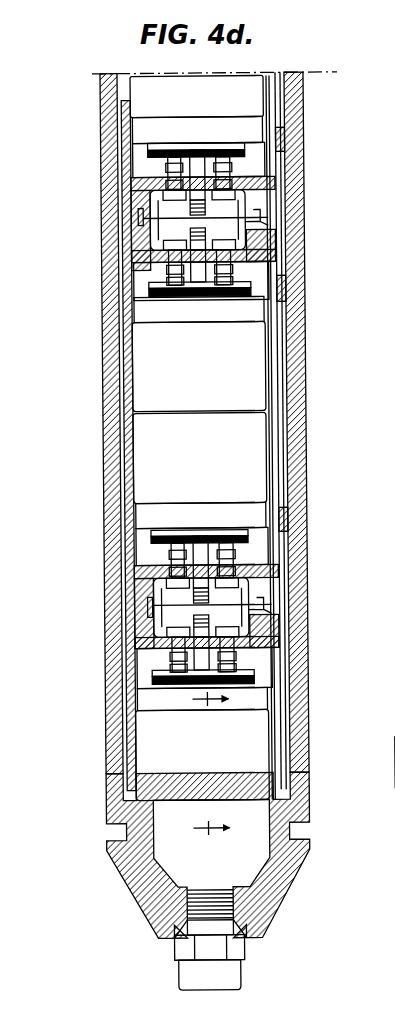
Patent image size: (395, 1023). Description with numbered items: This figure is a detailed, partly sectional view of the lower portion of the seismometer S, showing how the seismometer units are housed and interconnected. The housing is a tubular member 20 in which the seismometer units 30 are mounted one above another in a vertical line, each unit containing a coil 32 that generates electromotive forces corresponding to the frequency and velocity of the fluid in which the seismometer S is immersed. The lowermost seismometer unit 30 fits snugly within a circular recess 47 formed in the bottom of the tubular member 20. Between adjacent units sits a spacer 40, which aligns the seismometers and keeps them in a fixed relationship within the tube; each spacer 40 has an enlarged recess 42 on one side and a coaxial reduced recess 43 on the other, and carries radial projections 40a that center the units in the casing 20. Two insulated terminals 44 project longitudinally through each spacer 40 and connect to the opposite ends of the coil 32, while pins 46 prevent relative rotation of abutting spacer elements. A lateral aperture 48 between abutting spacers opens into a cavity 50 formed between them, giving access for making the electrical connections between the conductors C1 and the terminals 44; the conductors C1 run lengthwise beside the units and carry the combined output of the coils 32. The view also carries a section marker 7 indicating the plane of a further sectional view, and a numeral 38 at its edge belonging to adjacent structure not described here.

The tubular member 20 is at (298, 318).
The seismometer unit 30 is at (199, 437).
The coil 32 is at (236, 138).
The adjacent element 38 is at (389, 747).
The spacer 40 is at (136, 197).
The radial projection 40a is at (124, 156).
The enlarged recess 42 is at (275, 290).
The reduced recess 43 is at (250, 243).
The insulated terminal 44 is at (332, 270).
The pin 46 is at (138, 217).
The circular recess 47 is at (278, 790).
The lateral aperture 48 is at (255, 212).
The cavity 50 is at (199, 414).
The section line 7 is at (202, 764).
The seismometer S is at (92, 383).
The conductor C1 is at (290, 470).